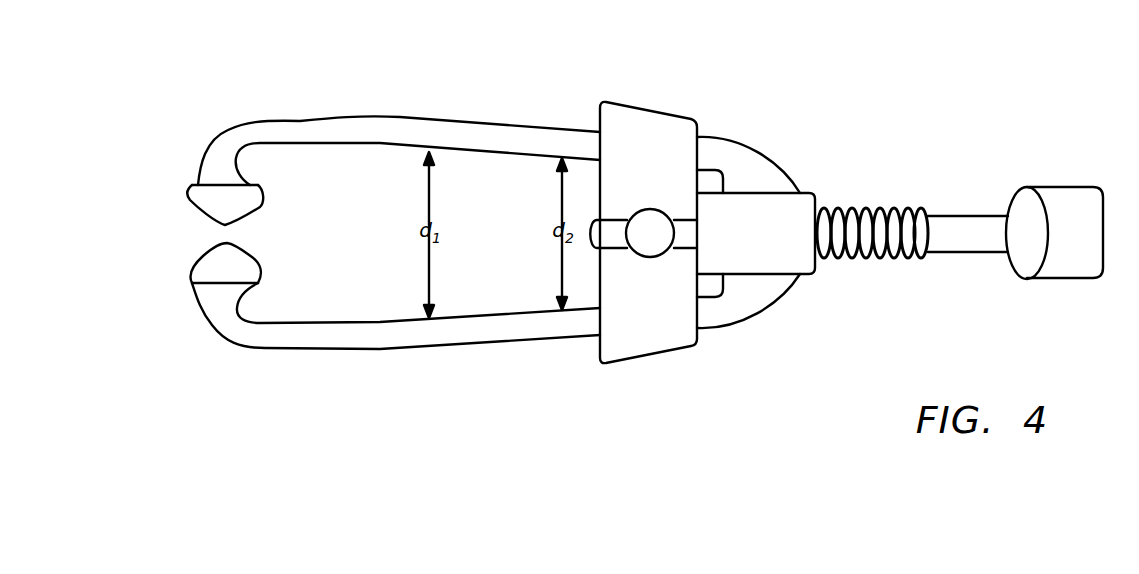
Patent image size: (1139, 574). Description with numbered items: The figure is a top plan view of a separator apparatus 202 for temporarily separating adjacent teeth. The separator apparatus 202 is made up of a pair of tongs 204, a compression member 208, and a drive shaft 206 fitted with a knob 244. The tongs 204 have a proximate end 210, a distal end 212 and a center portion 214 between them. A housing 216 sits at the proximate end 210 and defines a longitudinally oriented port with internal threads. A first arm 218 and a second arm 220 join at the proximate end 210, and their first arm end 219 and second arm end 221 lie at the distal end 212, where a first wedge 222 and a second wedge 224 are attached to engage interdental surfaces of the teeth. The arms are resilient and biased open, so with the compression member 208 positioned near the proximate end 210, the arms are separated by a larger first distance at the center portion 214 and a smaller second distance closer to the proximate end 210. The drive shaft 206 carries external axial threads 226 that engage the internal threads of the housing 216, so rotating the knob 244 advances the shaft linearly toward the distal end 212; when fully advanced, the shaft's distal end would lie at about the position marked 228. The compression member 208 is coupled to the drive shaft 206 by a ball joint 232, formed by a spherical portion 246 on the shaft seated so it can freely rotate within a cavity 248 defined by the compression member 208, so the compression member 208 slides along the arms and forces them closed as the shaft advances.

The separator apparatus 202 is at (765, 92).
The tongs 204 is at (500, 133).
The drive shaft 206 is at (970, 223).
The compression member 208 is at (617, 117).
The proximate end 210 is at (733, 153).
The distal end 212 is at (257, 133).
The center portion 214 is at (423, 137).
The housing 216 is at (803, 262).
The first arm 218 is at (370, 133).
The first arm end 219 is at (230, 135).
The second arm 220 is at (350, 338).
The second arm end 221 is at (237, 332).
The first wedge 222 is at (220, 200).
The second wedge 224 is at (202, 275).
The external axial threads 226 is at (897, 212).
The drive shaft distal end position 228 is at (377, 230).
The ball joint 232 is at (647, 243).
The knob 244 is at (1068, 202).
The spherical portion 246 is at (652, 210).
The cavity 248 is at (677, 235).